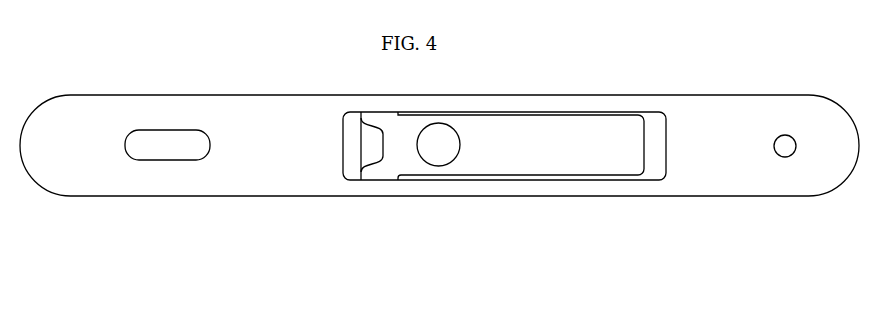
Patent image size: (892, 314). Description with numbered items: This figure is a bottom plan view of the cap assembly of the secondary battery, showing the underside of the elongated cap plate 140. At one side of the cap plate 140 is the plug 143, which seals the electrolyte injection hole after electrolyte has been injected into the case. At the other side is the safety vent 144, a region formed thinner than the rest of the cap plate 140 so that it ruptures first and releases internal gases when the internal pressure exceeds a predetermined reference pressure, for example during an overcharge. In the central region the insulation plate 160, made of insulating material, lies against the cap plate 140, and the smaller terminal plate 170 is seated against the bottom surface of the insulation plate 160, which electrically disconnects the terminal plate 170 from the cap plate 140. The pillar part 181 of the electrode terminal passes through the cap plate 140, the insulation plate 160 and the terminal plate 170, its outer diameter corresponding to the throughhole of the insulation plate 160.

The cap plate 140 is at (87, 180).
The plug 143 is at (785, 157).
The safety vent 144 is at (166, 147).
The insulation plate 160 is at (583, 185).
The terminal plate 170 is at (523, 158).
The pillar part 181 is at (437, 155).